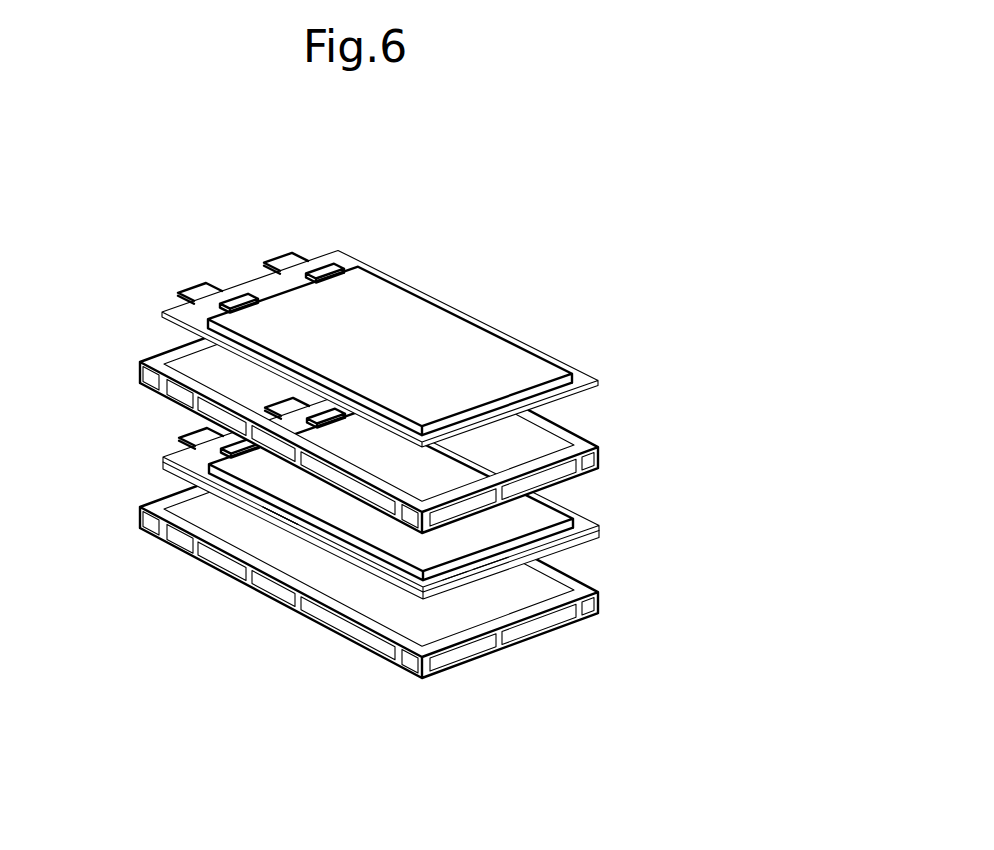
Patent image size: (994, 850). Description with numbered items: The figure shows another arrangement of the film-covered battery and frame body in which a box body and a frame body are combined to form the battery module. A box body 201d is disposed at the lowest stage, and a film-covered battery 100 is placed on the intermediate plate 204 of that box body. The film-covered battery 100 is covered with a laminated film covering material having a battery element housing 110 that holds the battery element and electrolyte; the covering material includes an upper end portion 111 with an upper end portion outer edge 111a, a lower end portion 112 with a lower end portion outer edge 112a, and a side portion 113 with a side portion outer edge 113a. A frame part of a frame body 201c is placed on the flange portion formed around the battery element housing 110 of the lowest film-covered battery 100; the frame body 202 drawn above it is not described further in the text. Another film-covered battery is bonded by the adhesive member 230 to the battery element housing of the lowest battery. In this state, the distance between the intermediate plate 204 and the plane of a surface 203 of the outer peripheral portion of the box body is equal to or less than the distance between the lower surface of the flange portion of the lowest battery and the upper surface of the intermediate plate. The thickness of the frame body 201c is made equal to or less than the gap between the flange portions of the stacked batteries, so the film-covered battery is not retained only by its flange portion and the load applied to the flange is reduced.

The film-covered battery 100 is at (387, 489).
The battery element housing 110 is at (260, 331).
The upper end portion 111 is at (180, 451).
The upper end portion outer edge 111a is at (185, 457).
The lower end portion 112 is at (500, 574).
The lower end portion outer edge 112a is at (460, 578).
The side portion 113 is at (278, 528).
The side portion outer edge 113a is at (275, 520).
The upper cartridge frame 202 is at (443, 415).
The intermediate plate 204 is at (444, 560).
The frame body 201c is at (586, 424).
The box body 201d is at (614, 590).
The surface of outer peripheral portion 203 is at (388, 632).
The adhesive member 230 is at (520, 507).